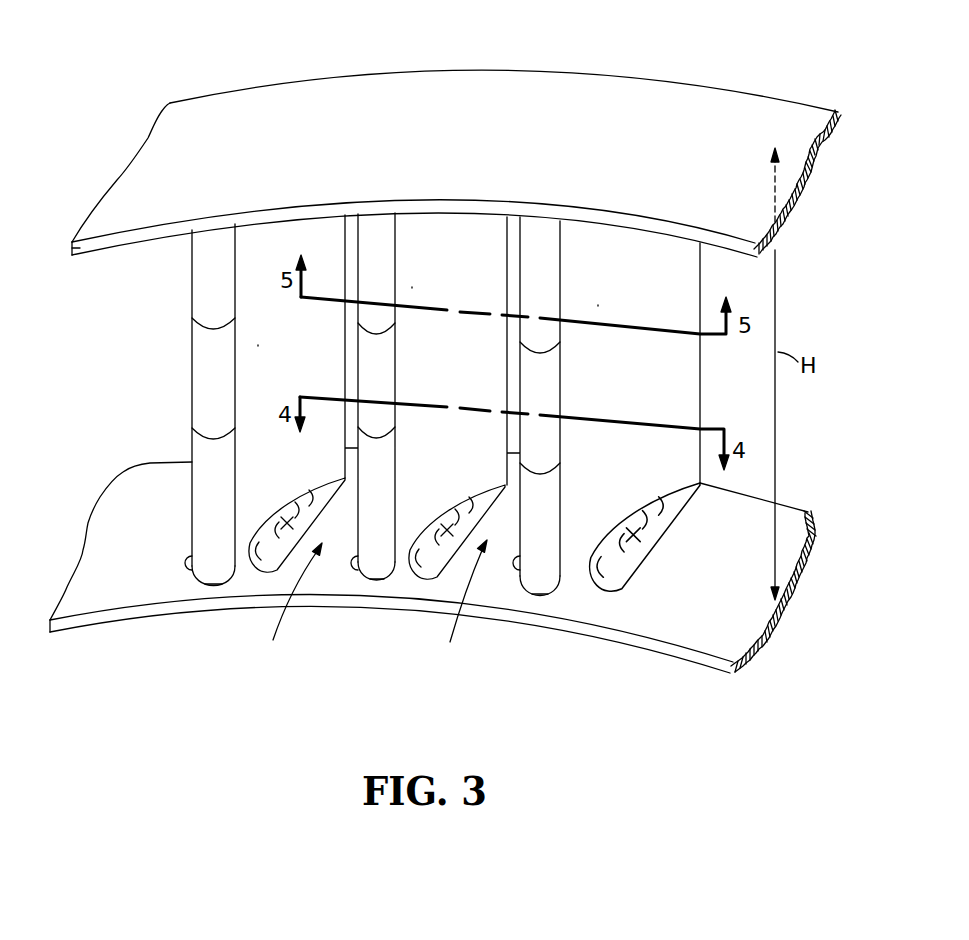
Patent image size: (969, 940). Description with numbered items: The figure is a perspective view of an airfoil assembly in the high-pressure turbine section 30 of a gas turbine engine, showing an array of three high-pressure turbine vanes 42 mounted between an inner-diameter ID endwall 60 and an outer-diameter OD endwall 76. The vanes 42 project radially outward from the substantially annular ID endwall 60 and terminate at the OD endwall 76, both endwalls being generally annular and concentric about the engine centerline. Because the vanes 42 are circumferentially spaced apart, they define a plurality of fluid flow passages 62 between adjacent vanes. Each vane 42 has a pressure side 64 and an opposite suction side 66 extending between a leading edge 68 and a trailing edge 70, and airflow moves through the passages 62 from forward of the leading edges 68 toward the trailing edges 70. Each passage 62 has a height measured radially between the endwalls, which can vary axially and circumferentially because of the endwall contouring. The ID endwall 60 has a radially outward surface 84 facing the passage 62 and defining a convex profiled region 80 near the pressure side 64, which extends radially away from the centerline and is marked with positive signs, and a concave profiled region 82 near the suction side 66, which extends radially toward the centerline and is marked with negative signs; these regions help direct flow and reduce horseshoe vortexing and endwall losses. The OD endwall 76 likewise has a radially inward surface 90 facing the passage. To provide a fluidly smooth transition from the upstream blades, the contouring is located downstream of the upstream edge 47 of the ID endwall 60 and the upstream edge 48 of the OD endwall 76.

The high-pressure turbine section 30 is at (207, 74).
The OD endwall 76 is at (748, 123).
The upstream edge of the OD endwall 48 is at (173, 228).
The radially inward surface 90 is at (108, 247).
The trailing edge 70 is at (700, 285).
The suction side 66 is at (192, 318).
The pressure side 64 is at (258, 345).
The high-pressure turbine vane 42 is at (283, 380).
The ID endwall 60 is at (157, 507).
The radially outward surface 84 is at (722, 533).
The concave profiled region 82 is at (188, 568).
The convex profiled region 80 is at (260, 568).
The leading edge 68 is at (217, 562).
The fluid flow passage 62 is at (373, 603).
The upstream edge of the ID endwall 47 is at (657, 643).